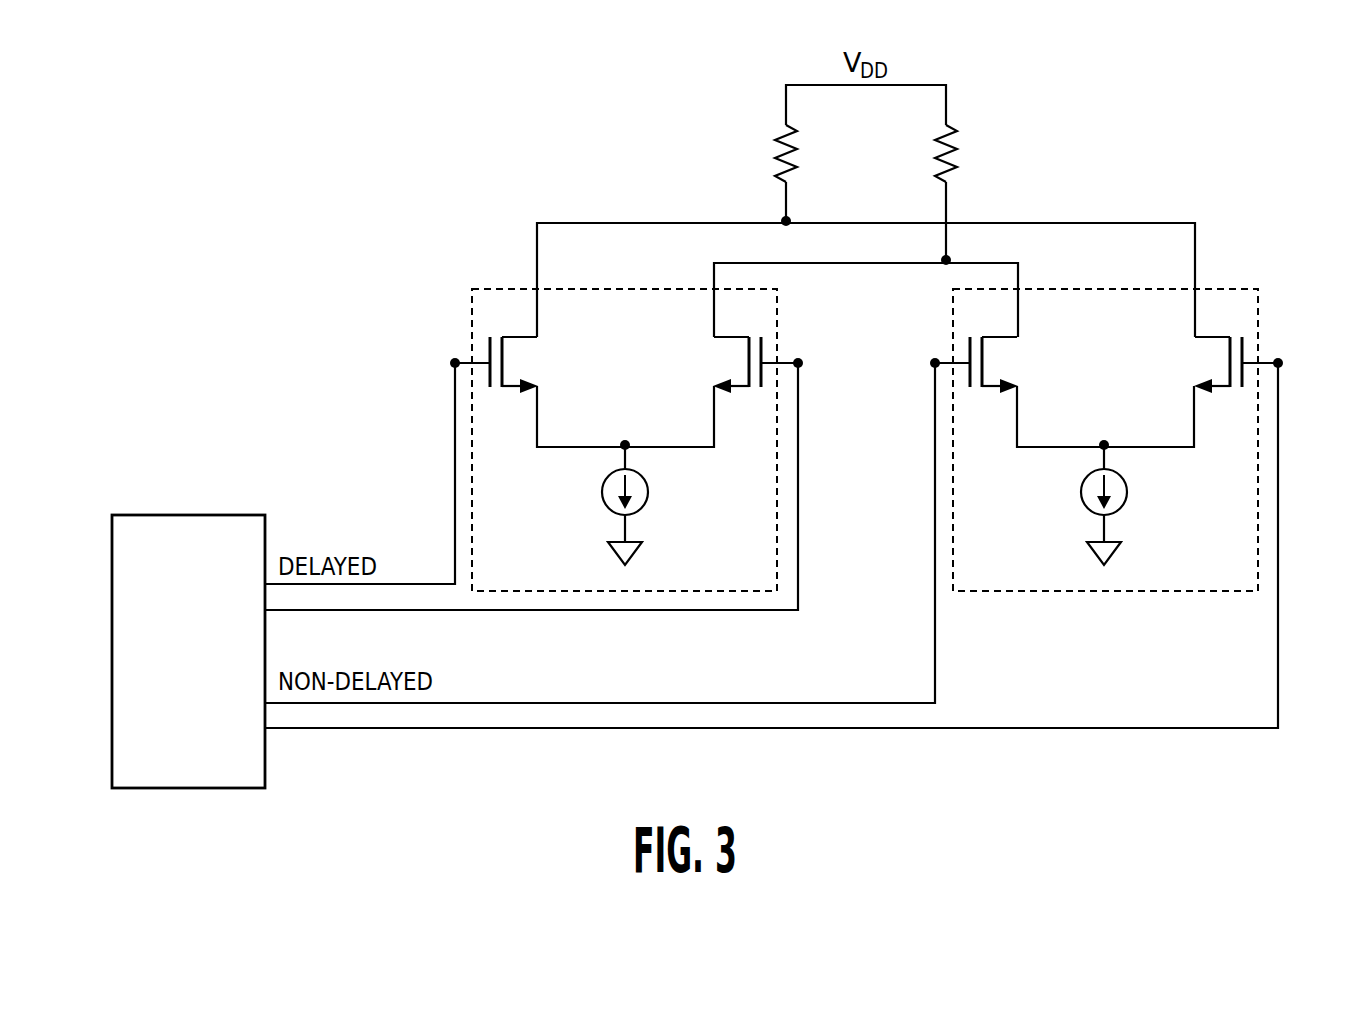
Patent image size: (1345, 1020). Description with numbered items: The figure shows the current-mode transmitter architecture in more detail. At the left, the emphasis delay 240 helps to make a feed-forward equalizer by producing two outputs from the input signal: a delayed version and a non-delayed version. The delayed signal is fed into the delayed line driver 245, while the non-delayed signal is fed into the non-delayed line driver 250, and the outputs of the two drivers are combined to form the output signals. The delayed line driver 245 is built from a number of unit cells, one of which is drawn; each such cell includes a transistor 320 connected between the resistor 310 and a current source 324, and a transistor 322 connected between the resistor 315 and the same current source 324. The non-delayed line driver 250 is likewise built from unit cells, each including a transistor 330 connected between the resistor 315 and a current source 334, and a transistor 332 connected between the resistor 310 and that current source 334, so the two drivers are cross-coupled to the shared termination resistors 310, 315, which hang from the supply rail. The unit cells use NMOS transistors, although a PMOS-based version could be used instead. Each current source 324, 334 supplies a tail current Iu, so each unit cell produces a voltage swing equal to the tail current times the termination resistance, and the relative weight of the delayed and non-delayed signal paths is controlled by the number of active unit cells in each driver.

The emphasis delay 240 is at (180, 515).
The delayed line driver 245 is at (603, 403).
The non-delayed line driver 250 is at (1129, 403).
The resistor 310 is at (776, 158).
The resistor 315 is at (957, 150).
The transistor 320 is at (520, 340).
The transistor 322 is at (731, 340).
The current source 324 is at (600, 504).
The transistor 330 is at (1005, 340).
The transistor 332 is at (1210, 340).
The current source 334 is at (1080, 504).